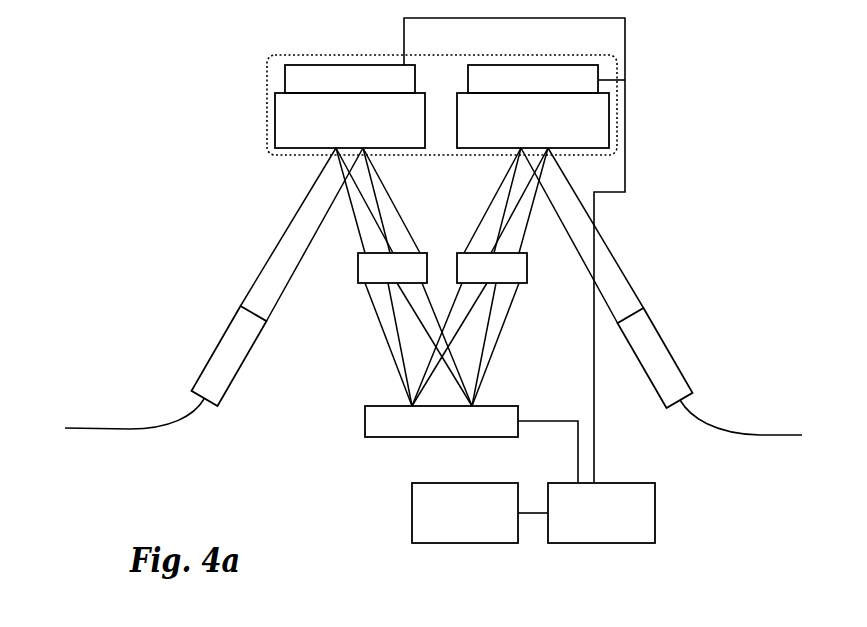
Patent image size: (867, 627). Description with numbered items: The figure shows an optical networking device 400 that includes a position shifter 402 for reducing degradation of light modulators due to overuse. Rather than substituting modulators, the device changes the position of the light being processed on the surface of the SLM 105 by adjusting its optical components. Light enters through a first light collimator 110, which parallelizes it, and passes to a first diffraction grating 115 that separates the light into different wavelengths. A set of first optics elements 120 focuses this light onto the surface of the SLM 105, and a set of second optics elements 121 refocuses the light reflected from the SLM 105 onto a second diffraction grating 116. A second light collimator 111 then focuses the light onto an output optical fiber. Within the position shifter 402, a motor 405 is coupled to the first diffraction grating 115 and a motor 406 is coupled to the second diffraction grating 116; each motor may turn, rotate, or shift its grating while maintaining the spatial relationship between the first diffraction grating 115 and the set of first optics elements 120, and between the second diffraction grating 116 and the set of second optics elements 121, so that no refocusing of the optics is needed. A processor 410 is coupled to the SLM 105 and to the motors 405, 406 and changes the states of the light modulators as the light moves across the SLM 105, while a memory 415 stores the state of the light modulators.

The optical networking device 400 is at (195, 44).
The position shifter 402 is at (572, 56).
The motor 406 is at (300, 64).
The motor 405 is at (484, 64).
The second diffraction grating 116 is at (282, 94).
The first diffraction grating 115 is at (470, 150).
The set of second optics elements 121 is at (358, 268).
The set of first optics elements 120 is at (526, 266).
The second light collimator 111 is at (212, 352).
The first light collimator 110 is at (663, 342).
The SLM 105 is at (503, 405).
The memory 415 is at (458, 482).
The processor 410 is at (638, 482).